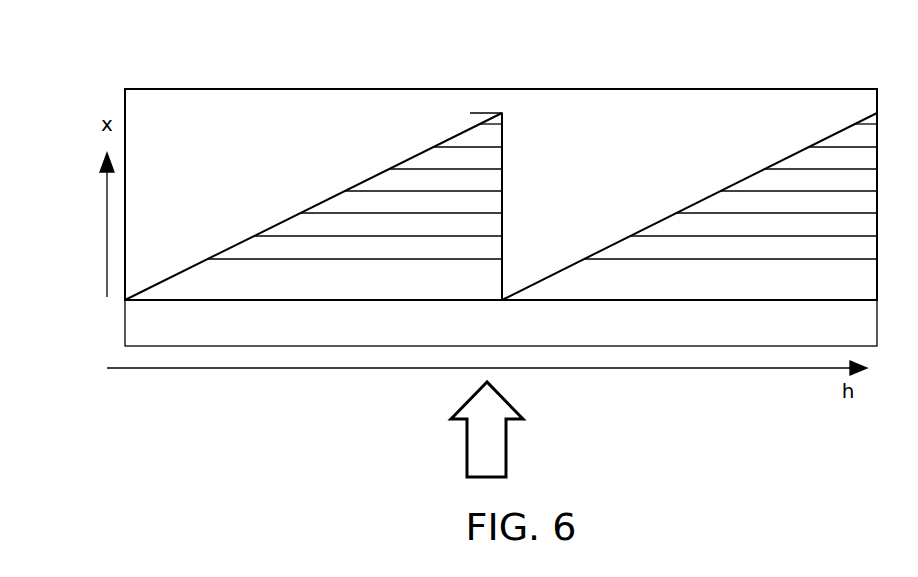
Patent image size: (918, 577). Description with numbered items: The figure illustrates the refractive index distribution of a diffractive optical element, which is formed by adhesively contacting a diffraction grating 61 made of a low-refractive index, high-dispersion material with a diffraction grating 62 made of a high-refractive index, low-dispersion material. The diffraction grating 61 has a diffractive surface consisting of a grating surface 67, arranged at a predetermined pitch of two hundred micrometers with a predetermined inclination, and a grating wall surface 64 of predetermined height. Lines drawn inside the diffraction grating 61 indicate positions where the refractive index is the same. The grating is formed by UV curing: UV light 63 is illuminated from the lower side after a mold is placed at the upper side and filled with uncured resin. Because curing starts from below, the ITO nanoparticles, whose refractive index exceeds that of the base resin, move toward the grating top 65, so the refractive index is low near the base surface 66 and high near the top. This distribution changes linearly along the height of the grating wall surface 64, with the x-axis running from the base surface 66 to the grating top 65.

The diffraction grating 61 is at (455, 160).
The diffraction grating 62 is at (240, 160).
The UV light 63 is at (489, 444).
The grating wall surface 64 is at (503, 183).
The grating top 65 is at (503, 112).
The base surface 66 is at (163, 300).
The grating surface 67 is at (300, 192).